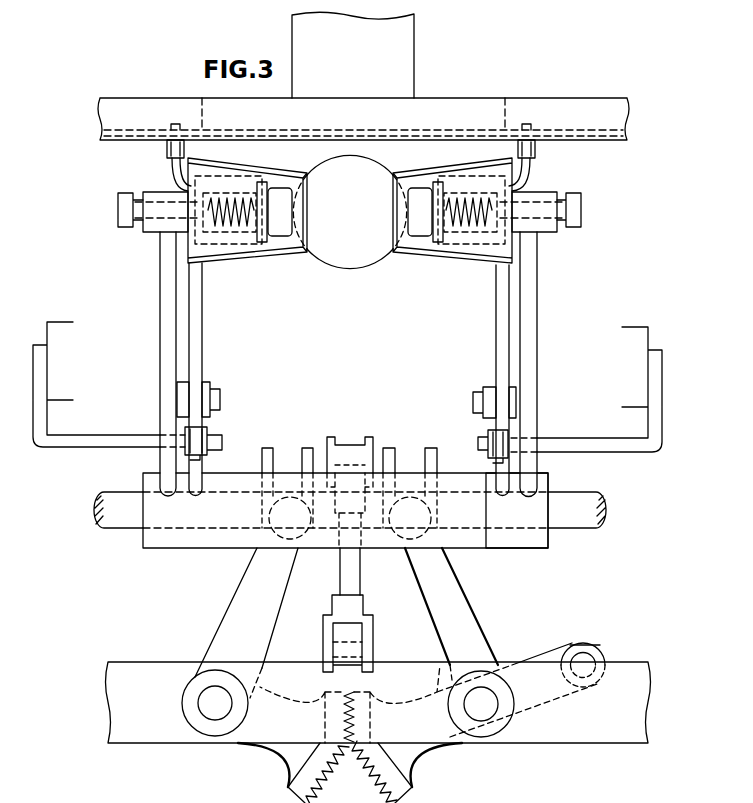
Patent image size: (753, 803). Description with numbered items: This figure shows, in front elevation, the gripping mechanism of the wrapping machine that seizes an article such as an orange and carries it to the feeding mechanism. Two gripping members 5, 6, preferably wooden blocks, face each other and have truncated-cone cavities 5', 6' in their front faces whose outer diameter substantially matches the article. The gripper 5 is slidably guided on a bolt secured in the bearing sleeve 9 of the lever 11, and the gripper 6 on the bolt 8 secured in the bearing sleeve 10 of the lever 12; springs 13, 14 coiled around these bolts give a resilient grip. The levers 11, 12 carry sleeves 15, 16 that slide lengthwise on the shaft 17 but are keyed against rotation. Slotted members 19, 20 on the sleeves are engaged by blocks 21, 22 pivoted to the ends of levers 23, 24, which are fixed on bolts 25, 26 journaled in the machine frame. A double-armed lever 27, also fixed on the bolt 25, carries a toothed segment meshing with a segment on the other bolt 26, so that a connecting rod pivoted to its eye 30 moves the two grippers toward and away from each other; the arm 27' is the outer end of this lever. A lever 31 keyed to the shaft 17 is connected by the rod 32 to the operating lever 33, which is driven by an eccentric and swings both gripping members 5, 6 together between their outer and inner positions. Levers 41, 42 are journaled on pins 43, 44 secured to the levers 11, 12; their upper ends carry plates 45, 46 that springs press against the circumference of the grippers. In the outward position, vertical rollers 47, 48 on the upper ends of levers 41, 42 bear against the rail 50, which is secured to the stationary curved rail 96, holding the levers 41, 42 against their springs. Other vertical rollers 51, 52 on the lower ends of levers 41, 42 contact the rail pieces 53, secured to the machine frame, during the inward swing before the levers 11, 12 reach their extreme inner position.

The stationary curved rail 96 is at (405, 62).
The rail 50 is at (172, 107).
The vertical roller 48 is at (188, 151).
The vertical roller 47 is at (517, 150).
The plate 46 is at (277, 198).
The plate 45 is at (426, 196).
The cavity 6' is at (312, 194).
The cavity 5' is at (386, 194).
The bolt 8 is at (130, 198).
The bearing sleeve 10 is at (157, 198).
The bearing sleeve 9 is at (535, 198).
The lever 12 is at (160, 276).
The lever 11 is at (538, 286).
The spring 14 is at (247, 243).
The spring 13 is at (470, 240).
The gripping member 6 is at (247, 213).
The gripping member 5 is at (452, 217).
The lever 42 is at (202, 322).
The lever 41 is at (496, 322).
The pin 44 is at (220, 400).
The pin 43 is at (473, 400).
The vertical roller 52 is at (220, 441).
The vertical roller 51 is at (490, 446).
The rail pieces 53 is at (103, 446).
The slotted member 20 is at (306, 447).
The slotted member 19 is at (389, 447).
The lever 31 is at (349, 443).
The block 22 is at (267, 498).
The block 21 is at (432, 502).
The sleeve 16 is at (178, 540).
The sleeve 15 is at (526, 541).
The shaft 17 is at (575, 541).
The lever 24 is at (280, 592).
The lever 23 is at (463, 606).
The rod 32 is at (360, 573).
The operating lever 33 is at (364, 641).
The bolt 26 is at (215, 720).
The bolt 25 is at (486, 720).
The eye 30 is at (591, 662).
The double-armed lever 27 is at (538, 671).
The lever end 27' is at (604, 626).